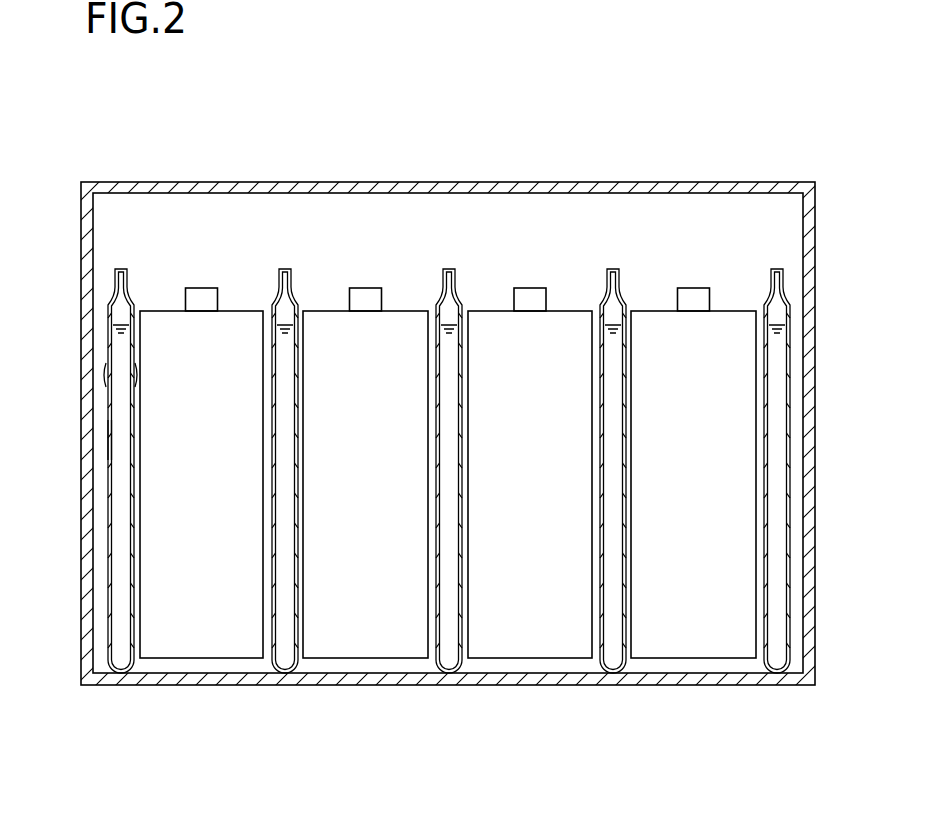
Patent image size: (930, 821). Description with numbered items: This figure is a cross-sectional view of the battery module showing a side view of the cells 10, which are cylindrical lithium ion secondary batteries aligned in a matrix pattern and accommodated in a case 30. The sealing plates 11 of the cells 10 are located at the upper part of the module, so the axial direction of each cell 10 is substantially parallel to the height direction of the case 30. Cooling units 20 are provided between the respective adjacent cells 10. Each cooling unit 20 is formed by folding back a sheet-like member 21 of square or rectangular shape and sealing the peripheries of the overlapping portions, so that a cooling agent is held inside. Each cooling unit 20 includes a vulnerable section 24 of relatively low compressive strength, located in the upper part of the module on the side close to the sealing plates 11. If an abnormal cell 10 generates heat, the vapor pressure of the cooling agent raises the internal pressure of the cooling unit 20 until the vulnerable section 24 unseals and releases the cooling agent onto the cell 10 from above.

The cell 10 is at (213, 628).
The sealing plate 11 is at (200, 287).
The cooling unit 20 is at (118, 262).
The sheet-like member 21 is at (108, 440).
The vulnerable section 24 is at (103, 373).
The case 30 is at (148, 686).